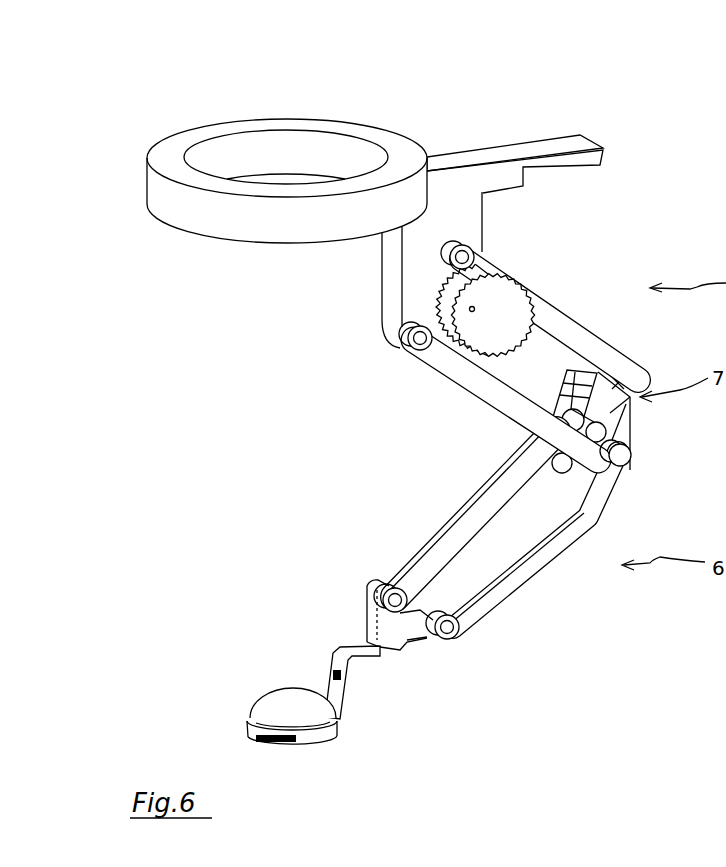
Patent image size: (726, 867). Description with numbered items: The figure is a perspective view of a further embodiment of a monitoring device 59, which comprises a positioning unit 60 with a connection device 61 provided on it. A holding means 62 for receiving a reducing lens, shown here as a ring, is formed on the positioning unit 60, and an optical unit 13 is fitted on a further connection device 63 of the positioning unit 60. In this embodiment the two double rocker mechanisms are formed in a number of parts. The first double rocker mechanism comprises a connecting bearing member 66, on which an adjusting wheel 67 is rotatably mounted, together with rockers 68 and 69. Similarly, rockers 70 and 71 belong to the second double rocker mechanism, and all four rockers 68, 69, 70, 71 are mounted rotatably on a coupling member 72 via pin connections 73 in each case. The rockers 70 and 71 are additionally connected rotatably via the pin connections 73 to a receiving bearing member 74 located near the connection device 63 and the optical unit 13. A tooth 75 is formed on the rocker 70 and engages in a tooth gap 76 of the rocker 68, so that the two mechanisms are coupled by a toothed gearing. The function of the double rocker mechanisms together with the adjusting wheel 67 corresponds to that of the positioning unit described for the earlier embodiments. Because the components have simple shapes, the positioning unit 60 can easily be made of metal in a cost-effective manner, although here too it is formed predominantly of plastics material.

The optical unit 13 is at (260, 698).
The monitoring device 59 is at (128, 116).
The positioning unit 60 is at (120, 257).
The connection device 61 is at (567, 130).
The holding means 62 is at (311, 115).
The connection device 63 is at (366, 642).
The connecting bearing member 66 is at (460, 227).
The adjusting wheel 67 is at (495, 295).
The rocker 68 is at (545, 318).
The rocker 69 is at (460, 365).
The rocker 70 is at (492, 490).
The rocker 71 is at (560, 545).
The coupling member 72 is at (622, 428).
The pin connections 73 is at (470, 254).
The holder 74 is at (392, 630).
The tooth 75 is at (598, 400).
The tooth gap 76 is at (620, 380).